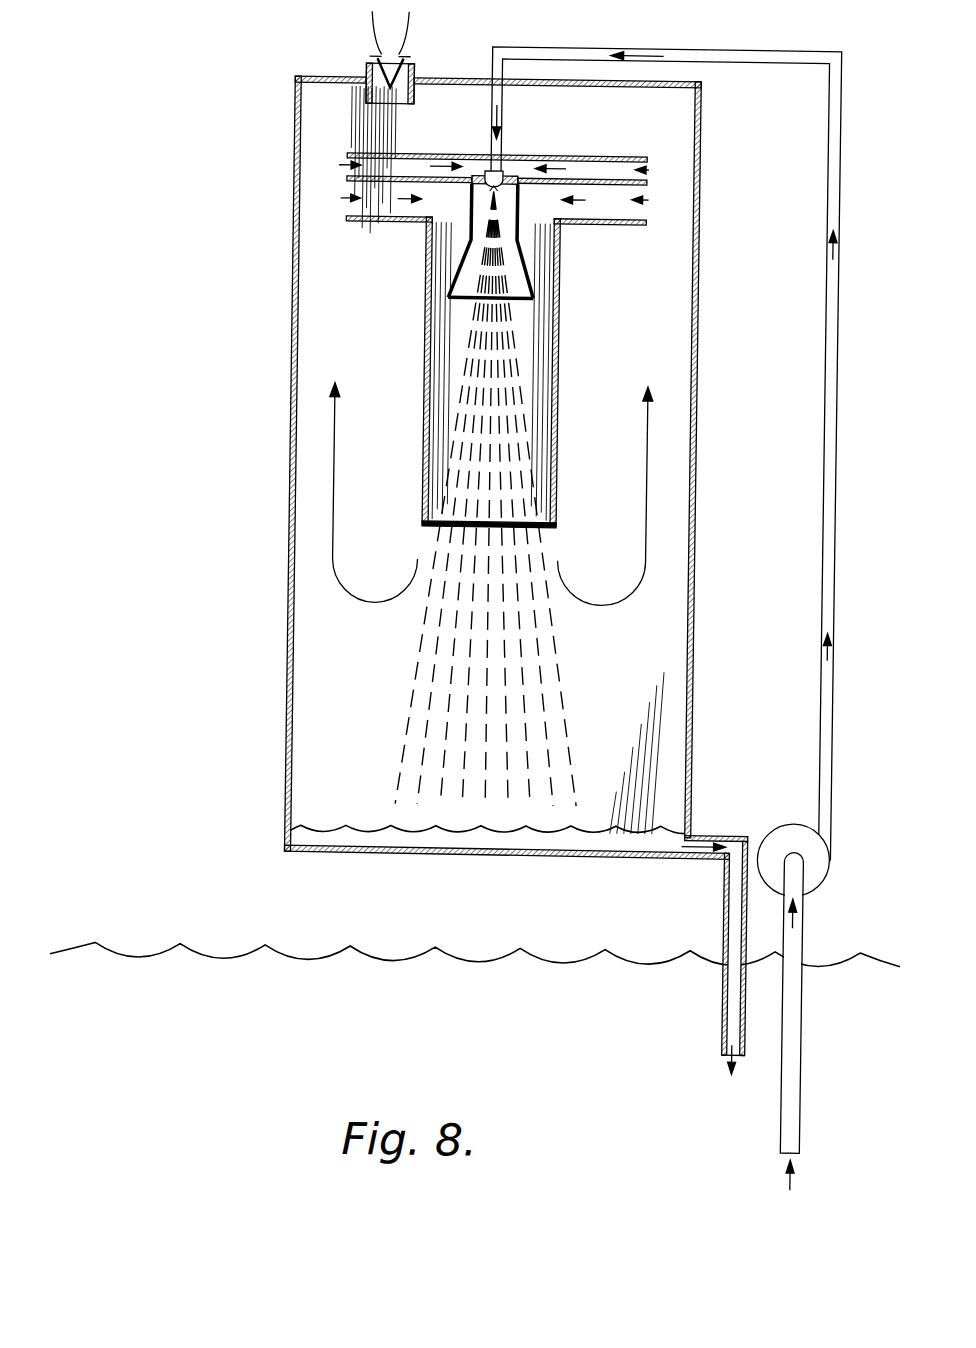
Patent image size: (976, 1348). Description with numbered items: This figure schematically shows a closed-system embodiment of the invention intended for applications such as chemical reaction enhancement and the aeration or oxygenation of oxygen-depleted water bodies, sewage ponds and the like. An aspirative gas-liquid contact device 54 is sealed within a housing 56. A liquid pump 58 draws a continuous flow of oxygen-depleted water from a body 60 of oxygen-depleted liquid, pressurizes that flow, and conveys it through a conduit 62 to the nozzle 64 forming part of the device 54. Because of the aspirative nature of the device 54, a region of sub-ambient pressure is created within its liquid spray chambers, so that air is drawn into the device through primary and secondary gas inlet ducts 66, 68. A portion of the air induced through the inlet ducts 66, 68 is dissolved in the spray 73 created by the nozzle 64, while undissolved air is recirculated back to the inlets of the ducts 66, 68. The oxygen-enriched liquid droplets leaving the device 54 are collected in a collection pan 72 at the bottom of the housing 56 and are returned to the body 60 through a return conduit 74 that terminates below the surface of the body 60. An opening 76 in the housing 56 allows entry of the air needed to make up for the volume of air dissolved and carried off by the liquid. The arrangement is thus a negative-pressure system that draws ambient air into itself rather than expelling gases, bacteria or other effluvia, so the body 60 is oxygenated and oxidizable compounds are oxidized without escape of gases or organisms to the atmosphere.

The aspirative gas-liquid contact device 54 is at (616, 315).
The housing 56 is at (698, 424).
The liquid pump 58 is at (781, 823).
The body of oxygen-depleted liquid 60 is at (593, 962).
The conduit 62 is at (832, 364).
The nozzle 64 is at (507, 172).
The primary gas inlet duct 66 is at (653, 155).
The secondary gas inlet duct 68 is at (652, 214).
The collection pan 72 is at (314, 860).
The spray 73 is at (525, 382).
The return conduit 74 is at (728, 833).
The opening 76 is at (416, 77).